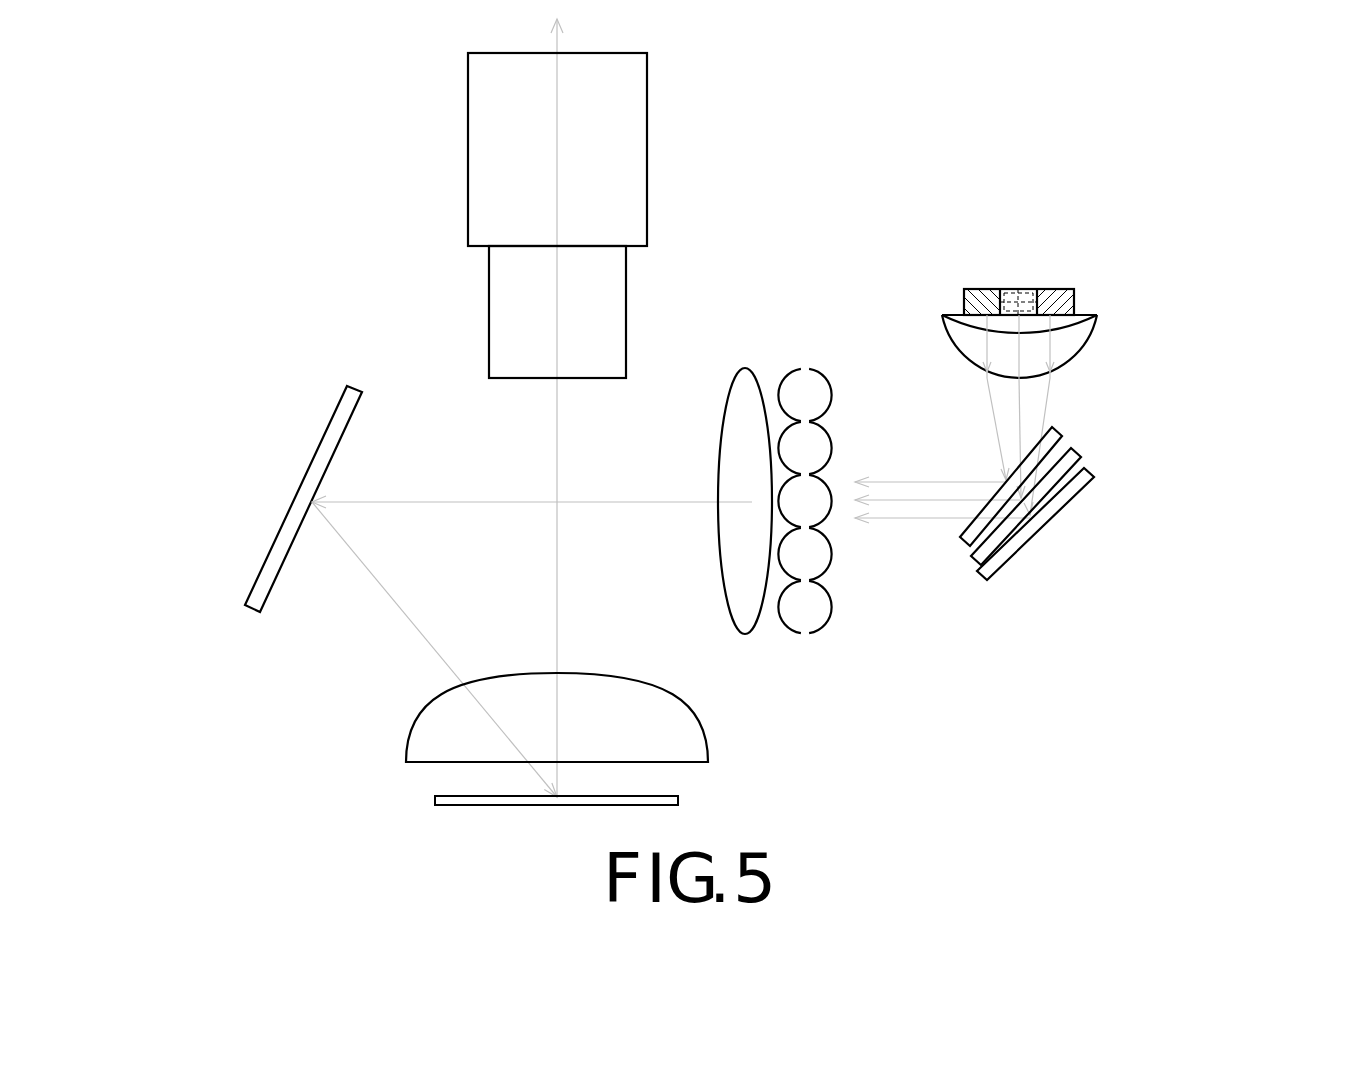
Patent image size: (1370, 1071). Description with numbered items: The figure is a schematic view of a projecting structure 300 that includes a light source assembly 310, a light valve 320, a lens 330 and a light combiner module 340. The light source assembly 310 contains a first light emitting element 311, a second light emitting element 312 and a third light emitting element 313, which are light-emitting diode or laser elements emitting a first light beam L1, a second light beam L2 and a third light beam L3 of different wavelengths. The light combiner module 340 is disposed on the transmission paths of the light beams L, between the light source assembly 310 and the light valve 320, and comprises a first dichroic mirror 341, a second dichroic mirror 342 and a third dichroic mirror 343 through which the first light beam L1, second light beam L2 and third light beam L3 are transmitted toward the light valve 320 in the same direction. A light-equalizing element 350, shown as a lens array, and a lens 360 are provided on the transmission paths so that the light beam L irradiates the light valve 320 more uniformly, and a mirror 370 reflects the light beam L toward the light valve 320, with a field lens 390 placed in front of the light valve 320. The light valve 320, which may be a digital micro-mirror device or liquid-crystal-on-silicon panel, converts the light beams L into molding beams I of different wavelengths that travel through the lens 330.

The projecting structure 300 is at (220, 192).
The light source assembly 310 is at (1015, 268).
The first light emitting element 311 is at (981, 289).
The second light emitting element 312 is at (1020, 289).
The third light emitting element 313 is at (1068, 265).
The light valve 320 is at (680, 800).
The lens 330 is at (490, 184).
The light combiner module 340 is at (1151, 496).
The first dichroic mirror 341 is at (1053, 430).
The second dichroic mirror 342 is at (1069, 455).
The third dichroic mirror 343 is at (1081, 482).
The light-equalizing element 350 is at (818, 365).
The lens 360 is at (745, 367).
The mirror 370 is at (352, 393).
The field lens 390 is at (668, 716).
The light beam L is at (432, 500).
The first light beam L1 is at (988, 417).
The second light beam L2 is at (1019, 443).
The third light beam L3 is at (1053, 393).
The molding beam I is at (558, 437).